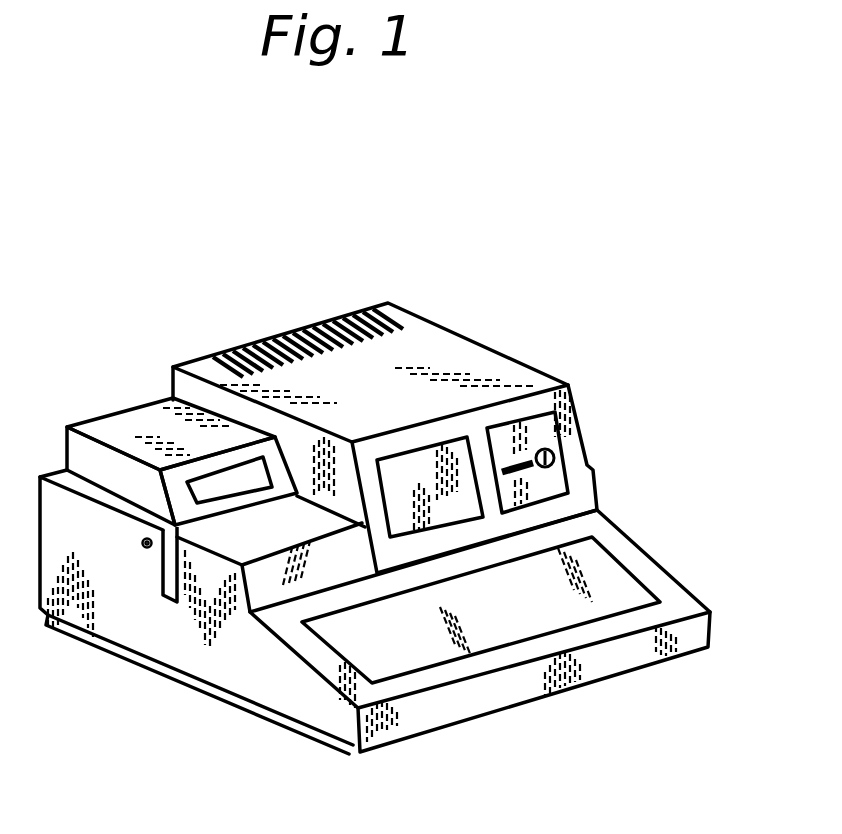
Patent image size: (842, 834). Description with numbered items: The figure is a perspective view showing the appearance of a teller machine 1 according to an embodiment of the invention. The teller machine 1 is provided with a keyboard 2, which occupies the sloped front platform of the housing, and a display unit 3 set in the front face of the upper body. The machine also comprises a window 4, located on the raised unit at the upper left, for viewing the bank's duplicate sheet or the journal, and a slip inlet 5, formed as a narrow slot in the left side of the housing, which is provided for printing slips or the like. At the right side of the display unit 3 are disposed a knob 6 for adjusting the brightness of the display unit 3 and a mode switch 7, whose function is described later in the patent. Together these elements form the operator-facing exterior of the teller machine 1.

The teller machine 1 is at (540, 235).
The keyboard 2 is at (608, 575).
The display unit 3 is at (418, 447).
The window 4 is at (200, 490).
The slip inlet 5 is at (162, 575).
The knob 6 is at (520, 457).
The mode switch 7 is at (555, 458).